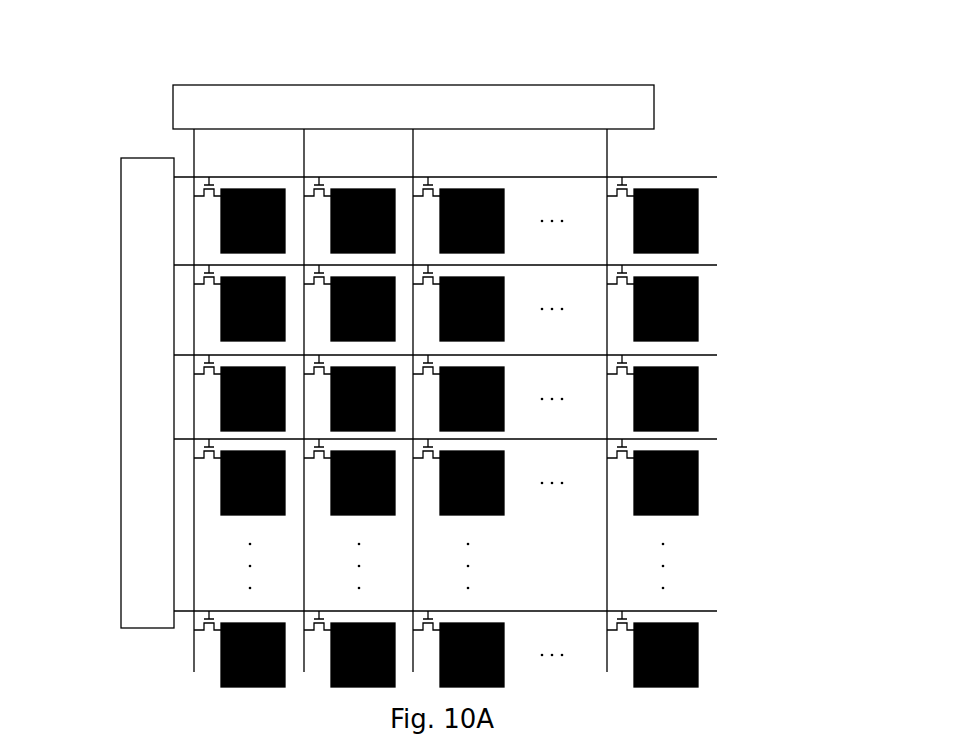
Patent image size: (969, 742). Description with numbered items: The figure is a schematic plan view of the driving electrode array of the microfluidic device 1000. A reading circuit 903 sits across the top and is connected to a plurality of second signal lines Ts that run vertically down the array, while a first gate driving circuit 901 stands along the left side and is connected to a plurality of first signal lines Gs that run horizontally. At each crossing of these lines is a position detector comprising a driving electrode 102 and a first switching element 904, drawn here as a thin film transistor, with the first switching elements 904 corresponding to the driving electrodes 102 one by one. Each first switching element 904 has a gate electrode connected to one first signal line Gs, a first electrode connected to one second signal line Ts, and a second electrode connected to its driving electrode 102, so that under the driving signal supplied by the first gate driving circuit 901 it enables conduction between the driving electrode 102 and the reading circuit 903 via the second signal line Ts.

The microfluidic device 1000 is at (740, 77).
The reading circuit 903 is at (643, 112).
The first gate driving circuit 901 is at (147, 598).
The driving electrode 102 is at (698, 313).
The first switching element 904 is at (607, 453).